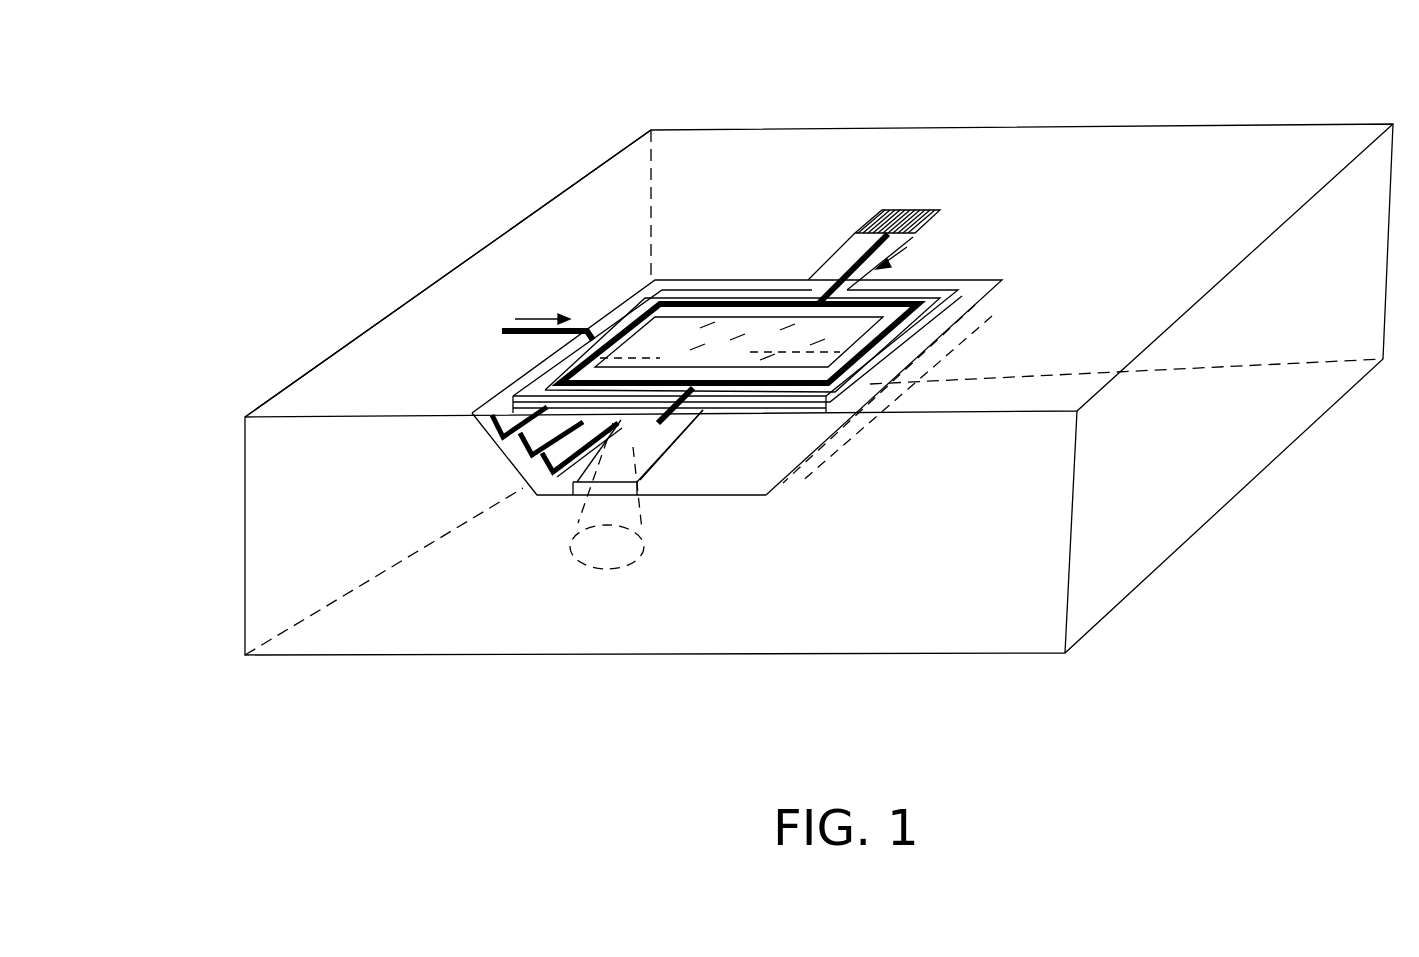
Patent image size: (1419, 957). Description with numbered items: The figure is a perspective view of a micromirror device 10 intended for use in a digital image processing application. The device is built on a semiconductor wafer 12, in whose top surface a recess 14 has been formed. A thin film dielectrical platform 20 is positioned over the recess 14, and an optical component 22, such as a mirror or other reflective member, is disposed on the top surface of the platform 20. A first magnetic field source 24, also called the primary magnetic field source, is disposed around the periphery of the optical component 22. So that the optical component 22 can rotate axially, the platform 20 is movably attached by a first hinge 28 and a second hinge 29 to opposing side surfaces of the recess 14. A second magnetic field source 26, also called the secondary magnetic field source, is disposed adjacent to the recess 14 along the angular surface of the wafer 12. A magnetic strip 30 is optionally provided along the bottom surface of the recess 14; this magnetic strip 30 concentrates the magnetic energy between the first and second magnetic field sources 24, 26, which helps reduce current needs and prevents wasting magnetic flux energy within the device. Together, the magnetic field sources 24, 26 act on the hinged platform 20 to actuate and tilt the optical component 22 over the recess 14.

The micromirror device 10 is at (453, 268).
The semiconductor wafer 12 is at (1198, 200).
The recess 14 is at (683, 472).
The thin film dielectrical platform 20 is at (961, 306).
The optical component 22 is at (827, 338).
The first magnetic field source 24 is at (915, 345).
The second magnetic field source 26 is at (533, 448).
The first hinge 28 is at (817, 280).
The second hinge 29 is at (695, 425).
The magnetic strip 30 is at (593, 485).